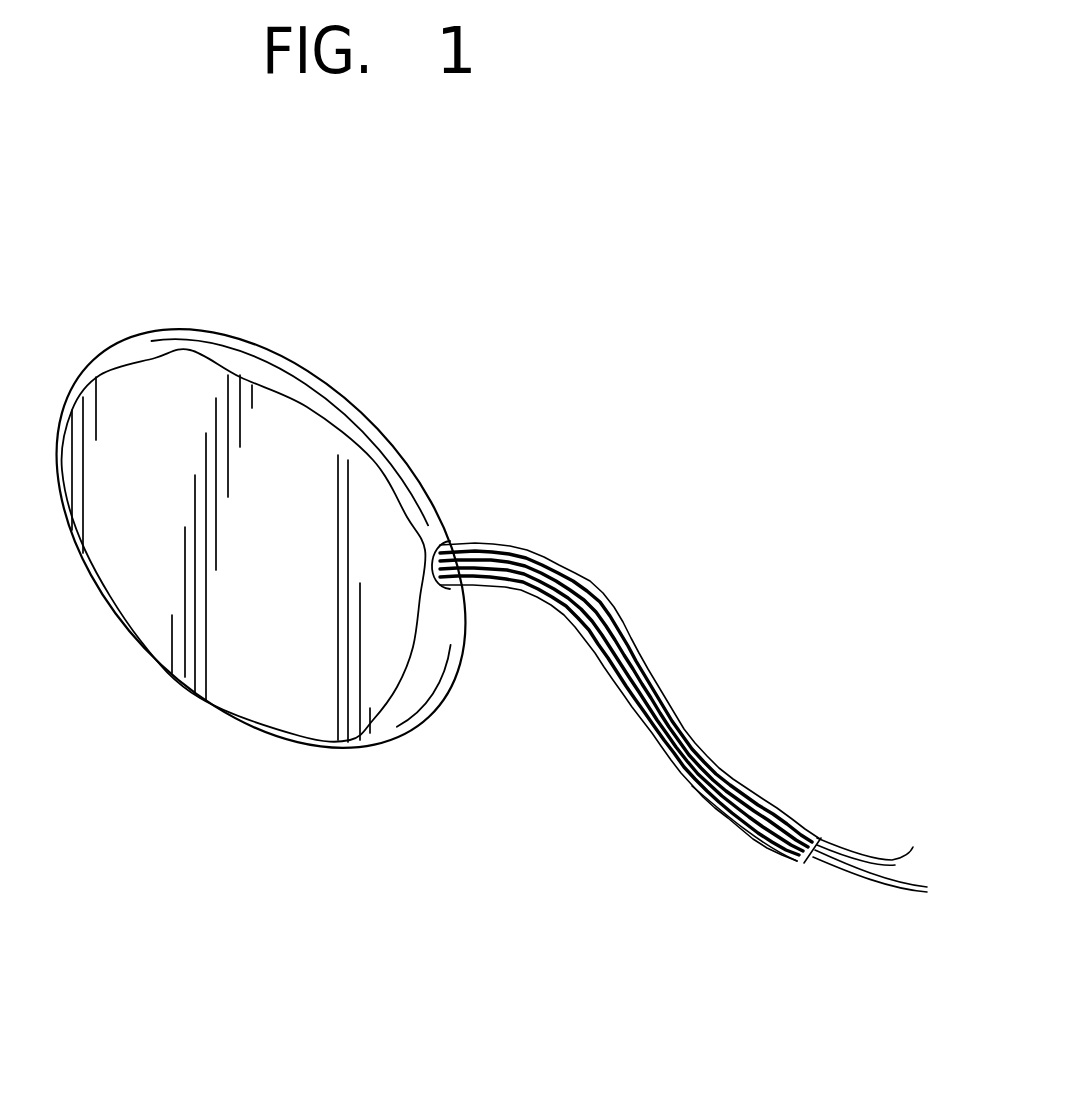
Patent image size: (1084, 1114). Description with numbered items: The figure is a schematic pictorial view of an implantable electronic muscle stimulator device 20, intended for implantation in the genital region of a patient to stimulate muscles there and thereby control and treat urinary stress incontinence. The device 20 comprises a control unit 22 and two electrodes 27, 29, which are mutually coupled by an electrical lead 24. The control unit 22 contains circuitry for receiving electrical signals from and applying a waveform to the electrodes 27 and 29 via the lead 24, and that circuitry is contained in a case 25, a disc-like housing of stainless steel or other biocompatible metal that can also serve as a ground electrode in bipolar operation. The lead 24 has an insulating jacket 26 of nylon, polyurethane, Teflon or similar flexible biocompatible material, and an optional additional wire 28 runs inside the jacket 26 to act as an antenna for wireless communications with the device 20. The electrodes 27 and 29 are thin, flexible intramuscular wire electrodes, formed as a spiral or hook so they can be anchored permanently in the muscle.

The implantable electronic muscle stimulator device 20 is at (468, 600).
The control unit 22 is at (209, 347).
The case 25 is at (222, 717).
The electrical lead 24 is at (684, 746).
The insulating jacket 26 is at (605, 595).
The additional wire 28 is at (692, 787).
The electrode 27 is at (912, 849).
The electrode 29 is at (937, 888).